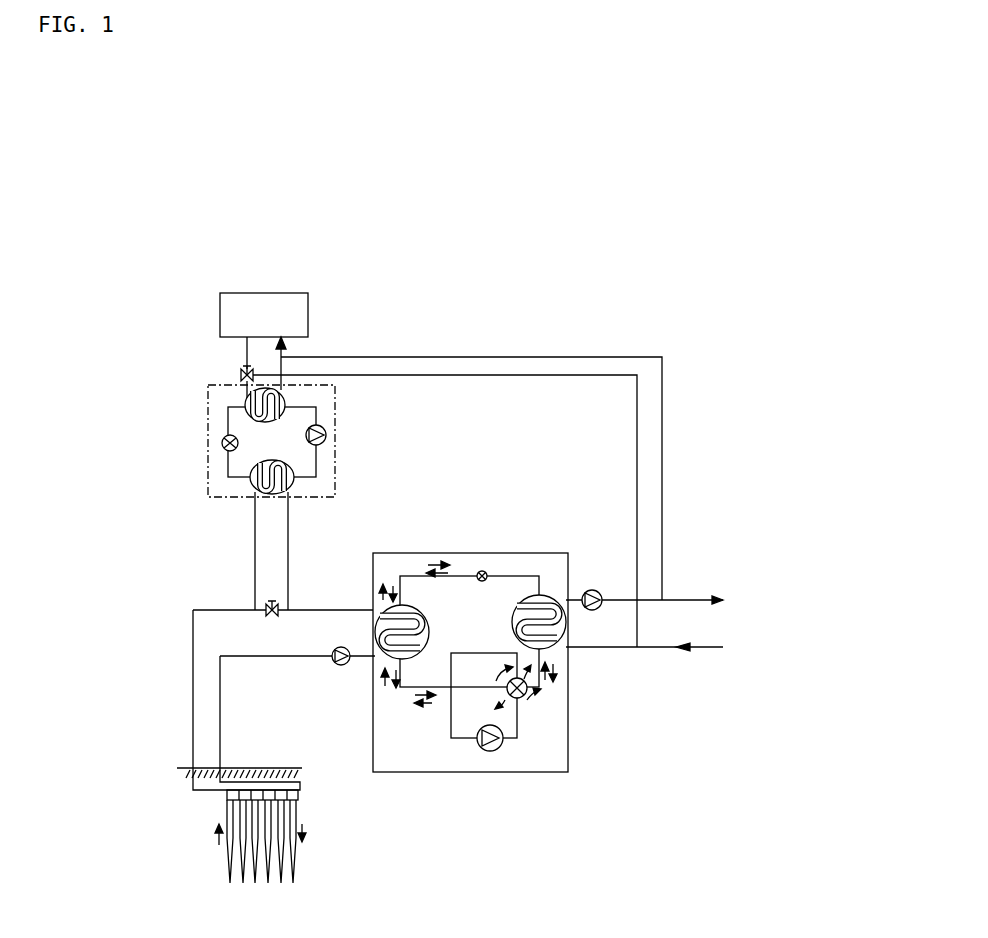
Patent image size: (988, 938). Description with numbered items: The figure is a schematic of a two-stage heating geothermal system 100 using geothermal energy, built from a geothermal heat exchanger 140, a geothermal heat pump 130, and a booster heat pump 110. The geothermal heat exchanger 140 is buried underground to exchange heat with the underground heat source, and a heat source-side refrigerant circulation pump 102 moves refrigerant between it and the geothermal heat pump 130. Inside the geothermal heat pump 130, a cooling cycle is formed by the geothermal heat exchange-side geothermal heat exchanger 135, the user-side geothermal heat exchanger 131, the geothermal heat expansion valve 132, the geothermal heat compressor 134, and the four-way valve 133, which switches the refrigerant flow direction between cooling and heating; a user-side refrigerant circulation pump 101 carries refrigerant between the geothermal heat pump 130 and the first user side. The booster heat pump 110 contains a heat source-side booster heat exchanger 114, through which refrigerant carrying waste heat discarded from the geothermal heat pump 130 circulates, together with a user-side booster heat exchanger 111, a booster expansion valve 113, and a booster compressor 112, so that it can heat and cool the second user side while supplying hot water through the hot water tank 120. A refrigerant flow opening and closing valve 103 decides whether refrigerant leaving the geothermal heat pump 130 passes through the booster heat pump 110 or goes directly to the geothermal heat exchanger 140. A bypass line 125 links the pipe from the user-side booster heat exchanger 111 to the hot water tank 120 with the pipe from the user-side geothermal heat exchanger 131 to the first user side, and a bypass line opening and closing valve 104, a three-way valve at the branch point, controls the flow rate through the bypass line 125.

The two-stage heating geothermal system 100 is at (452, 306).
The user-side refrigerant circulation pump 101 is at (590, 591).
The heat source-side refrigerant circulation pump 102 is at (337, 665).
The refrigerant flow opening and closing valve 103 is at (267, 604).
The bypass line opening and closing valve 104 is at (242, 371).
The booster heat pump 110 is at (123, 372).
The user-side booster heat exchanger 111 is at (240, 398).
The booster compressor 112 is at (306, 433).
The booster expansion valve 113 is at (222, 446).
The heat source-side booster heat exchanger 114 is at (262, 478).
The hot water tank 120 is at (270, 310).
The bypass line 125 is at (603, 357).
The geothermal heat pump 130 is at (665, 713).
The user-side geothermal heat exchanger 131 is at (486, 580).
The geothermal heat expansion valve 132 is at (545, 648).
The four-way valve 133 is at (530, 703).
The geothermal heat compressor 134 is at (500, 747).
The geothermal heat exchange-side geothermal heat exchanger 135 is at (398, 656).
The geothermal heat exchanger 140 is at (283, 808).